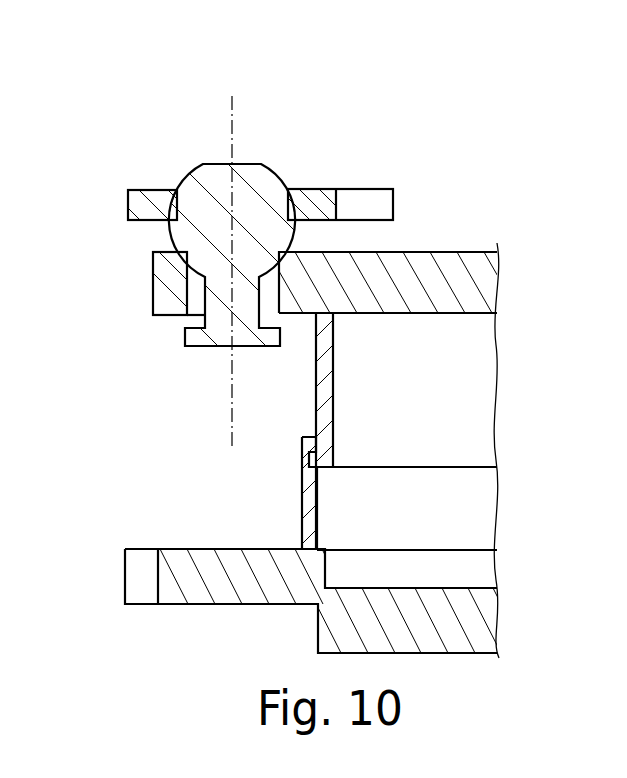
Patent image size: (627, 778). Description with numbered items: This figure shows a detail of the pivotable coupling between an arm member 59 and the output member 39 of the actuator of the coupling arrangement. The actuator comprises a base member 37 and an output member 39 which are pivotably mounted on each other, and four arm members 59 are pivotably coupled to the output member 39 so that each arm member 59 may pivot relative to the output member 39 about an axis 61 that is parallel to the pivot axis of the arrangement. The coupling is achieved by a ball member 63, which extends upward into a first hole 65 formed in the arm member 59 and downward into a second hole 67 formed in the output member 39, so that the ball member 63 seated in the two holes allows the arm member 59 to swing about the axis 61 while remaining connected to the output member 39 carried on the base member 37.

The axis 61 is at (233, 105).
The ball member 63 is at (273, 202).
The first hole 65 is at (180, 253).
The arm member 59 is at (372, 202).
The second hole 67 is at (200, 293).
The output member 39 is at (432, 407).
The base member 37 is at (312, 508).